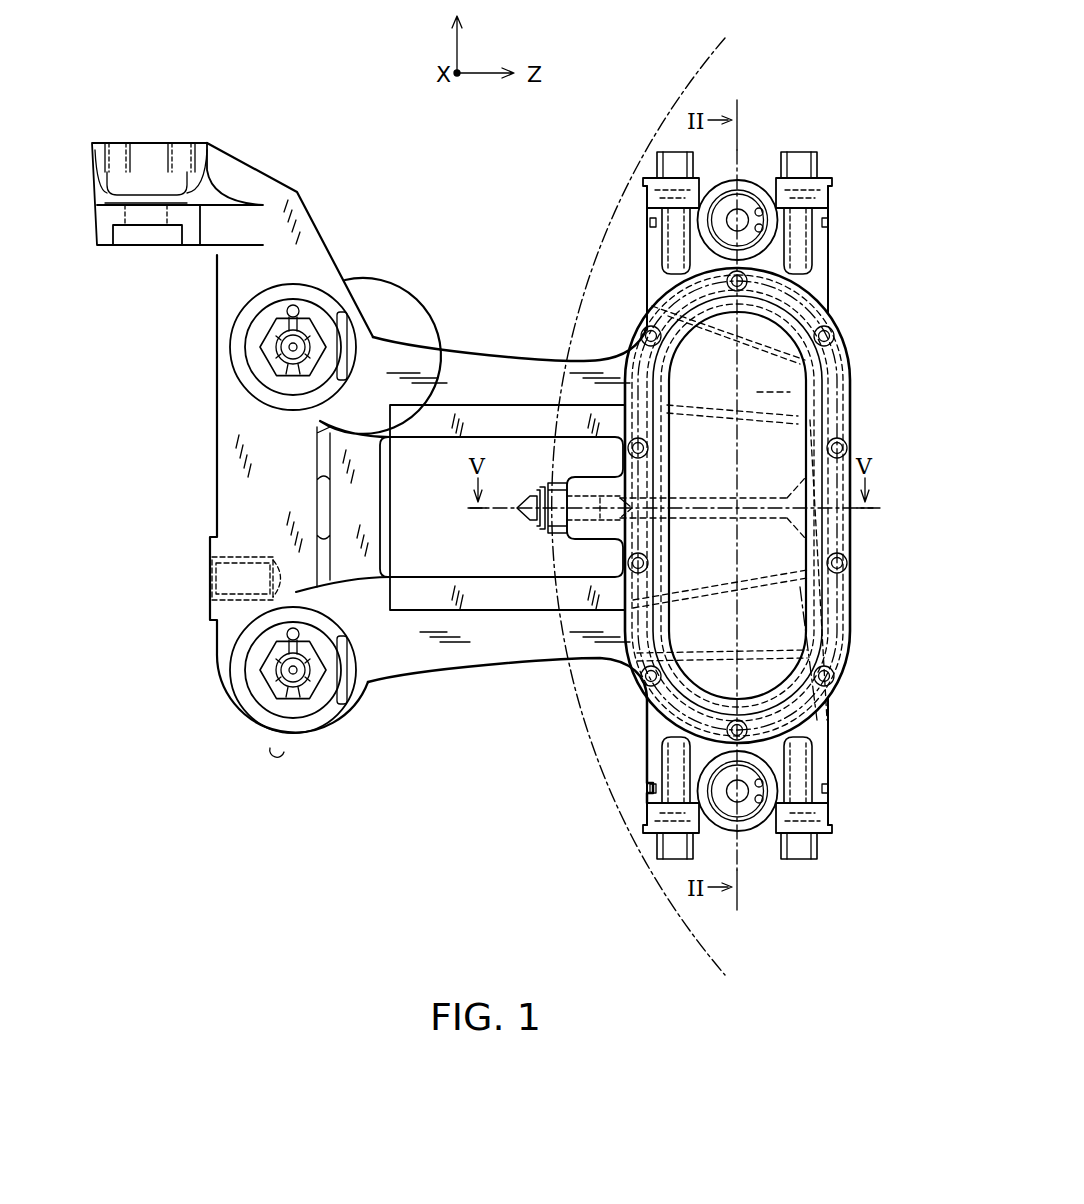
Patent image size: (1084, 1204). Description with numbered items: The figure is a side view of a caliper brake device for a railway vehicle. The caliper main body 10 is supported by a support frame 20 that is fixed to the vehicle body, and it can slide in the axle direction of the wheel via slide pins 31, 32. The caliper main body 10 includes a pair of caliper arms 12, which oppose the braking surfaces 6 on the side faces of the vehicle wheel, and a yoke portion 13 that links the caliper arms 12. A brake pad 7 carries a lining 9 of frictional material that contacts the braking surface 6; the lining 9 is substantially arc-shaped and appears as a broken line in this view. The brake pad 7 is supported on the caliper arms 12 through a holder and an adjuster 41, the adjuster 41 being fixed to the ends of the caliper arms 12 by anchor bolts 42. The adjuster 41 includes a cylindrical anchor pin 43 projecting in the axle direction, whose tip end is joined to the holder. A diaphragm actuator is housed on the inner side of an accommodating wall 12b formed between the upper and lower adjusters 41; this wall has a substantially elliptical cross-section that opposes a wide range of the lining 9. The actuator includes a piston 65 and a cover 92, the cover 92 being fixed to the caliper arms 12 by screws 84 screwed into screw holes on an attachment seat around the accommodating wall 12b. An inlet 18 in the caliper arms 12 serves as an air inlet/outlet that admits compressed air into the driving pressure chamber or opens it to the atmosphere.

The braking surface 6 is at (612, 790).
The brake pad 7 is at (650, 724).
The lining 9 is at (833, 409).
The caliper main body 10 is at (466, 338).
The caliper arm 12 is at (530, 357).
The accommodating wall 12b is at (640, 660).
The yoke portion 13 is at (372, 485).
The inlet 18 is at (577, 530).
The support frame 20 is at (297, 208).
The slide pin 31 is at (297, 340).
The slide pin 32 is at (303, 677).
The adjuster 41 is at (755, 195).
The anchor bolt 42 is at (805, 152).
The anchor pin 43 is at (742, 192).
The piston 65 is at (786, 338).
The screw 84 is at (828, 680).
The cover 92 is at (838, 618).